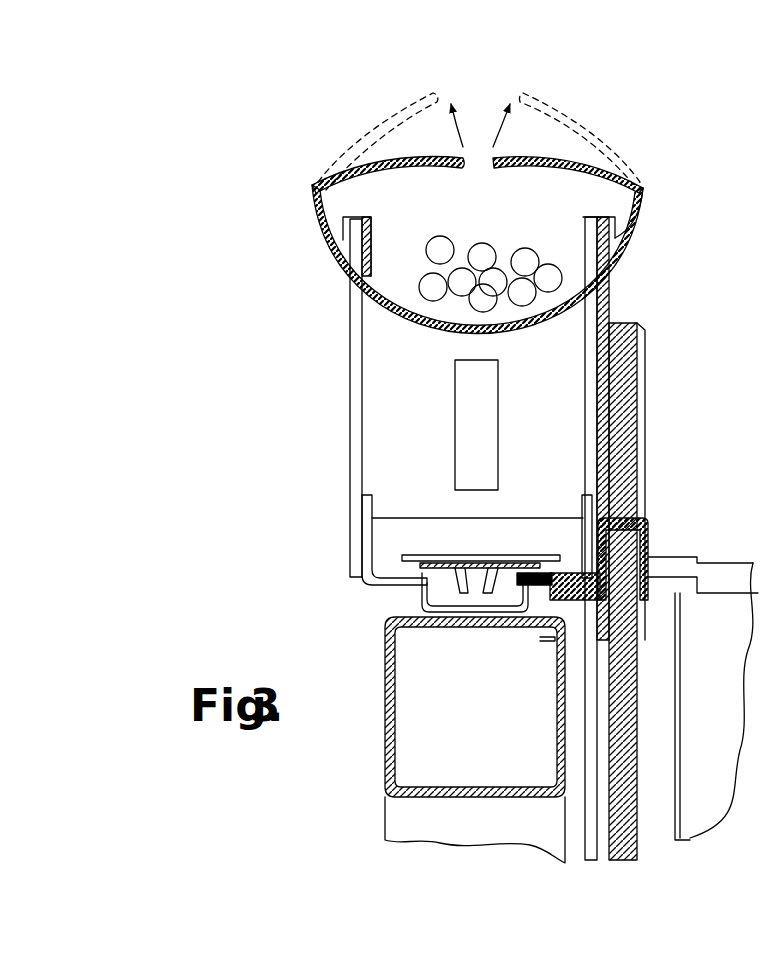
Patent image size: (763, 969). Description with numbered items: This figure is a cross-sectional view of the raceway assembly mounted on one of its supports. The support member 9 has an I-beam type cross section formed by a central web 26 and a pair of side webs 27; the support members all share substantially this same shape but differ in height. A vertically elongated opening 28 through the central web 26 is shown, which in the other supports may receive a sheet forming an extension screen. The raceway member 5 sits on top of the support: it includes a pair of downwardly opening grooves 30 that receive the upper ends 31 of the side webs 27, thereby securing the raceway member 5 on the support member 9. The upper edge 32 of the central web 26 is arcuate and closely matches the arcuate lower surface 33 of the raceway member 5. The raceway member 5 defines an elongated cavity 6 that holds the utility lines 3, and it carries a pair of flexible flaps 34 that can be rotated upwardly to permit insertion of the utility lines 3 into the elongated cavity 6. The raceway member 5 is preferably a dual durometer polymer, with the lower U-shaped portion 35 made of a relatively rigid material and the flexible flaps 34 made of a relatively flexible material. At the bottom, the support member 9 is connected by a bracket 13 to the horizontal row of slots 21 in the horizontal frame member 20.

The utility lines 3 is at (437, 236).
The raceway member 5 is at (642, 202).
The elongated cavity 6 is at (520, 207).
The support member 9 is at (340, 463).
The bracket 13 is at (363, 580).
The horizontal frame member 20 is at (385, 700).
The slots 21 is at (398, 597).
The central web 26 is at (397, 417).
The side webs 27 is at (350, 342).
The vertically elongated opening 28 is at (470, 440).
The downwardly opening grooves 30 is at (347, 267).
The upper ends 31 is at (353, 232).
The upper edge 32 is at (420, 328).
The arcuate lower surface 33 is at (313, 191).
The flexible flaps 34 is at (392, 163).
The lower U-shaped portion 35 is at (617, 220).